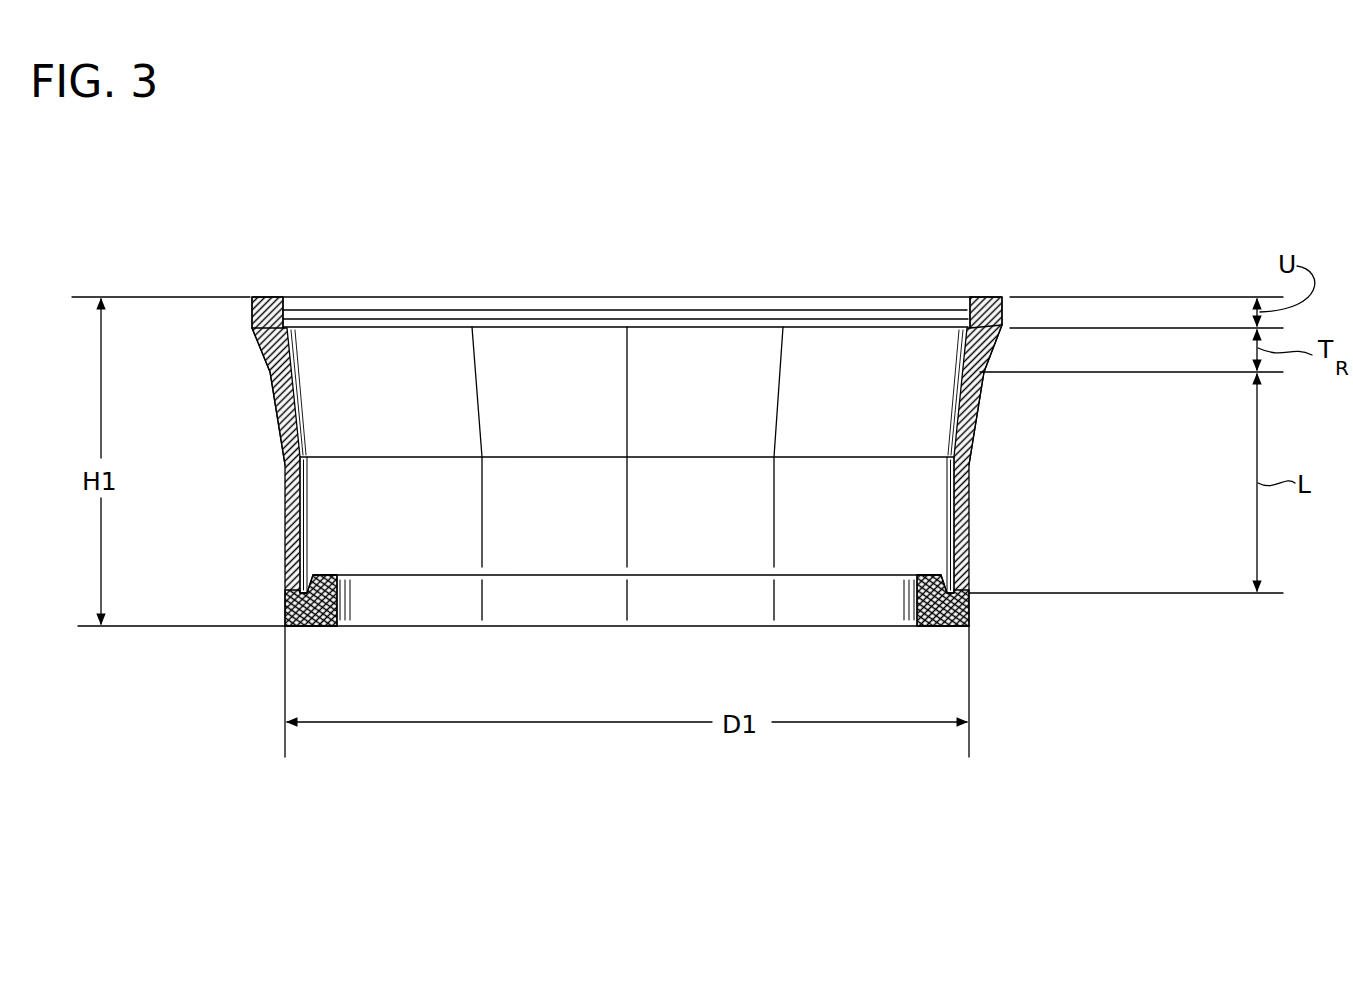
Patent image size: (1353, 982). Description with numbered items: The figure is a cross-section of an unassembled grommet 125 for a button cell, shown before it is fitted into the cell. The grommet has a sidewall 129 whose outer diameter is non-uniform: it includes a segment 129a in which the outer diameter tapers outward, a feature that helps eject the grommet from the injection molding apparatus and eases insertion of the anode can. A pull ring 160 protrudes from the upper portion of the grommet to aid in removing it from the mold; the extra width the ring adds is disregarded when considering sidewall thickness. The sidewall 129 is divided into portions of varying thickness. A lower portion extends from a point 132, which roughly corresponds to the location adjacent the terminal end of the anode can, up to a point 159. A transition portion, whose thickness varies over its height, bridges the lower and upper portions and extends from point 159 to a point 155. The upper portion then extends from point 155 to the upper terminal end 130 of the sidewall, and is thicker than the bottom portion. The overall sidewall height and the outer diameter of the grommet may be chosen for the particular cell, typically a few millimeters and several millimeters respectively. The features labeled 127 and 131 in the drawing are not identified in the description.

The grommet 125 is at (1019, 357).
The bottom ring / base 127 is at (948, 628).
The sidewall 129 is at (970, 505).
The segment 129a is at (277, 405).
The terminal end 130 is at (975, 297).
The inner sidewall surface 131 is at (968, 560).
The point 132 is at (955, 628).
The point 155 is at (1014, 319).
The point 159 is at (982, 372).
The pull ring 160 is at (965, 310).